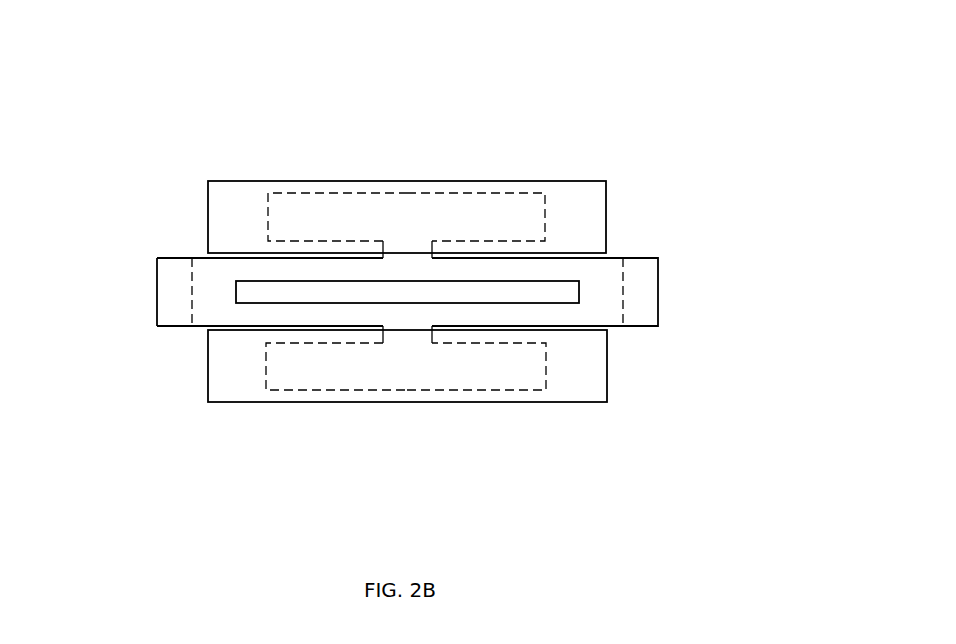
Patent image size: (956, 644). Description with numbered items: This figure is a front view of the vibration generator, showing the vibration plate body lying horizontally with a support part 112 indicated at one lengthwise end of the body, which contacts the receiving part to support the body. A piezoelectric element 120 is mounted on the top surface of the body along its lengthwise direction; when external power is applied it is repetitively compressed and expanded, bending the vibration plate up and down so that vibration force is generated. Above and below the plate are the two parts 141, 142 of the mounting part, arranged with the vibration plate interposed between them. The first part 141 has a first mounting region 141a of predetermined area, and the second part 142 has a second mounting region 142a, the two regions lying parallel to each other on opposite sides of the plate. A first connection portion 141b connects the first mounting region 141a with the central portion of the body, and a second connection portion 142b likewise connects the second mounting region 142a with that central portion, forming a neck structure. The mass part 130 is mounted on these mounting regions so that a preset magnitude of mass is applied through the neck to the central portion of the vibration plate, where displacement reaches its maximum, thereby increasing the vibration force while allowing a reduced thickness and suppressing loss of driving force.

The support part 112 is at (647, 293).
The piezoelectric element 120 is at (304, 293).
The mass part 130 is at (213, 220).
The first part of the mounting part 141 is at (487, 92).
The first mounting region 141a is at (347, 208).
The first connection portion 141b is at (407, 242).
The second part of the mounting part 142 is at (455, 494).
The second mounting region 142a is at (323, 376).
The second connection portion 142b is at (404, 337).